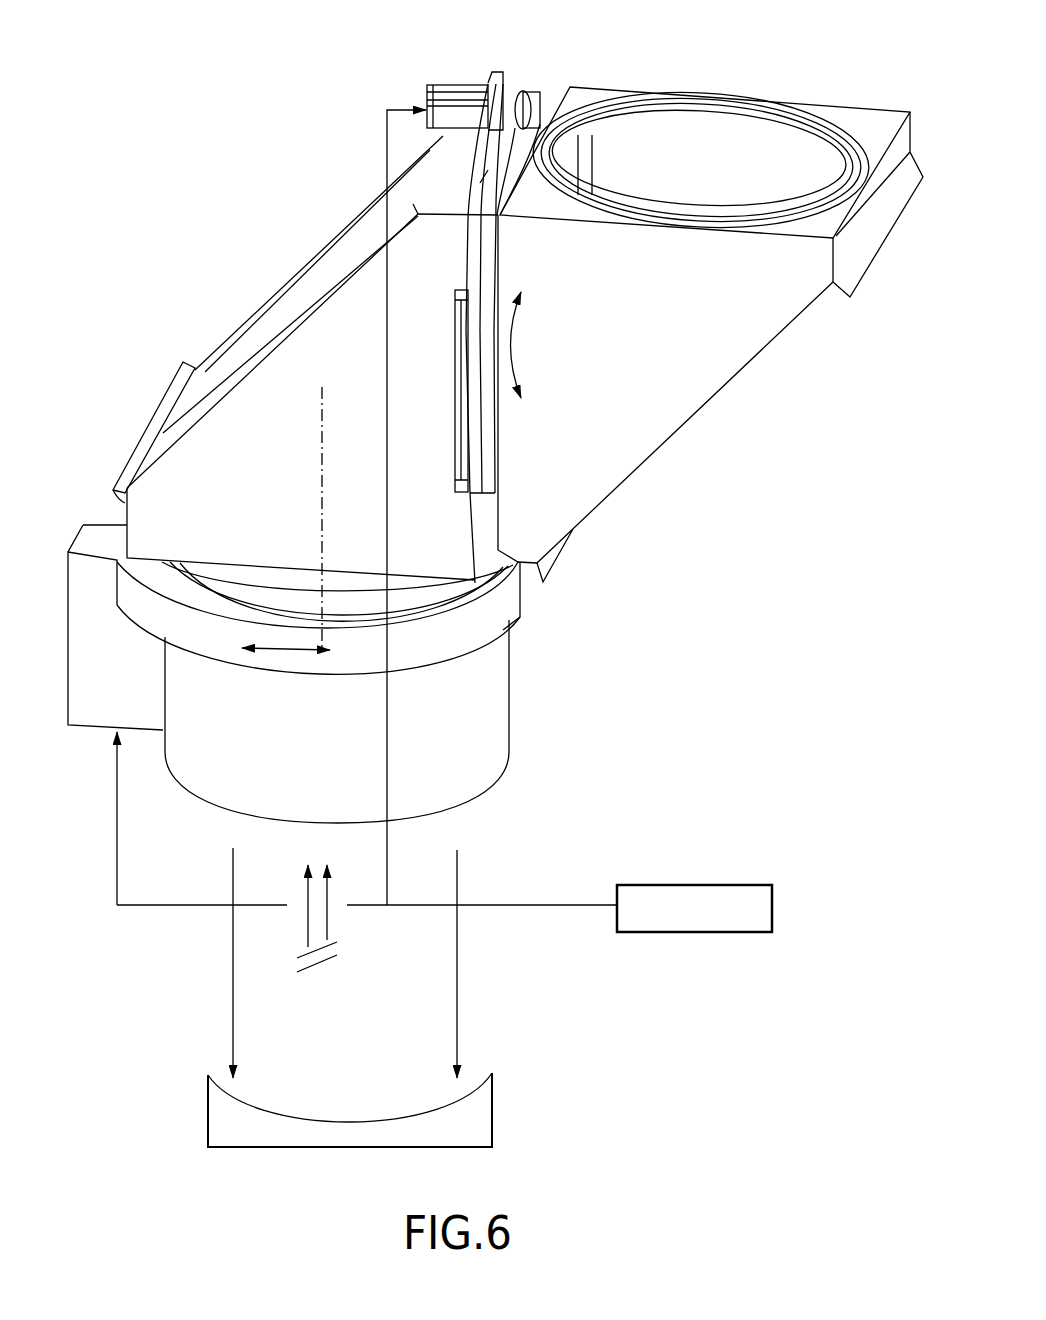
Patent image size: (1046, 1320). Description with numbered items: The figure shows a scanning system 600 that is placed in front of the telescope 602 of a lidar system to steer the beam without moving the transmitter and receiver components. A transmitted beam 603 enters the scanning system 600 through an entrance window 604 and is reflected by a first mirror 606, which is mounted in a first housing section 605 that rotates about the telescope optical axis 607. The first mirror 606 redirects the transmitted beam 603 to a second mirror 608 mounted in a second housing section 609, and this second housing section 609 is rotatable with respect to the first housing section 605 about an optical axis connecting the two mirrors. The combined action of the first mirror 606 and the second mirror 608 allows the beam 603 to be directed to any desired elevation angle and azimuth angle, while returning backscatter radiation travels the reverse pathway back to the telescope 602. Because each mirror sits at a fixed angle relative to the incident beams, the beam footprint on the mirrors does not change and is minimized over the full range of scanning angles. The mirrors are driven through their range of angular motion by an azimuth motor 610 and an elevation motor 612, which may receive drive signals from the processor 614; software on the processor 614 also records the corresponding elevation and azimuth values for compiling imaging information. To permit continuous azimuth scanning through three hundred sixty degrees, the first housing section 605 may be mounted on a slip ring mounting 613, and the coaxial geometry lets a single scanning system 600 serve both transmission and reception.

The scanning system 600 is at (782, 548).
The telescope 602 is at (202, 1017).
The transmitted beam 603 is at (328, 923).
The entrance window 604 is at (227, 812).
The first housing section 605 is at (209, 519).
The first mirror 606 is at (289, 284).
The telescope optical axis 607 is at (322, 421).
The second mirror 608 is at (706, 408).
The second housing section 609 is at (750, 298).
The azimuth motor 610 is at (98, 523).
The elevation motor 612 is at (455, 85).
The slip ring mounting 613 is at (480, 632).
The processor 614 is at (718, 932).